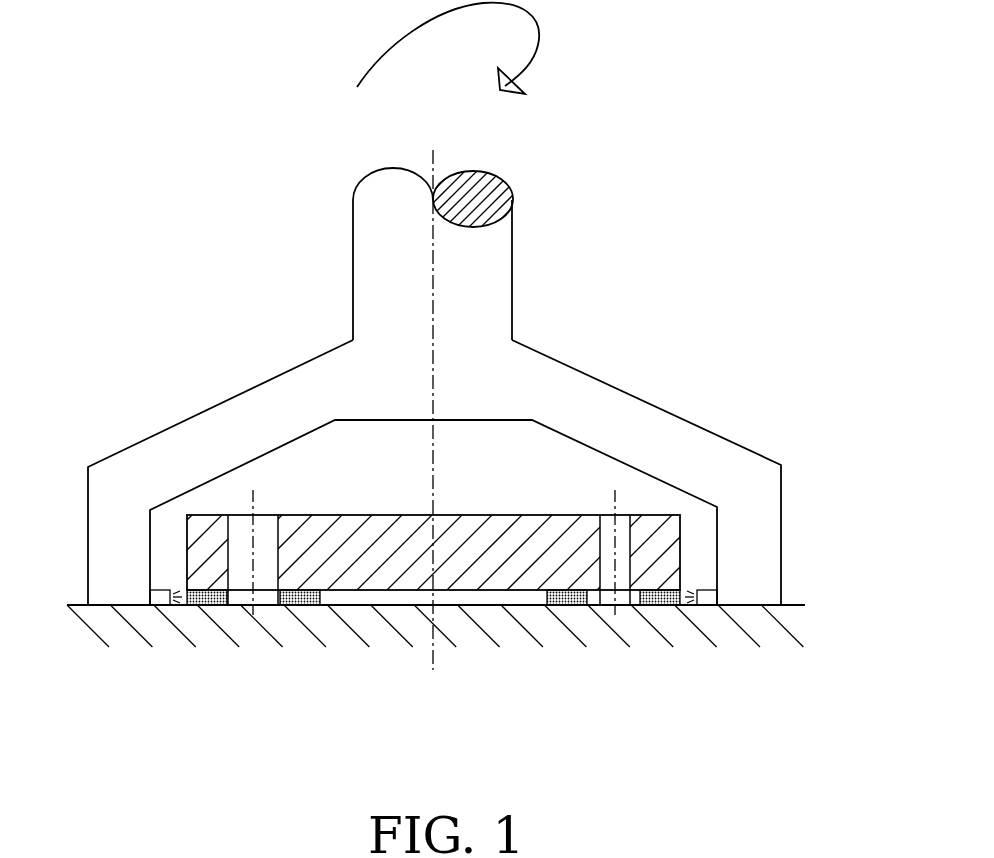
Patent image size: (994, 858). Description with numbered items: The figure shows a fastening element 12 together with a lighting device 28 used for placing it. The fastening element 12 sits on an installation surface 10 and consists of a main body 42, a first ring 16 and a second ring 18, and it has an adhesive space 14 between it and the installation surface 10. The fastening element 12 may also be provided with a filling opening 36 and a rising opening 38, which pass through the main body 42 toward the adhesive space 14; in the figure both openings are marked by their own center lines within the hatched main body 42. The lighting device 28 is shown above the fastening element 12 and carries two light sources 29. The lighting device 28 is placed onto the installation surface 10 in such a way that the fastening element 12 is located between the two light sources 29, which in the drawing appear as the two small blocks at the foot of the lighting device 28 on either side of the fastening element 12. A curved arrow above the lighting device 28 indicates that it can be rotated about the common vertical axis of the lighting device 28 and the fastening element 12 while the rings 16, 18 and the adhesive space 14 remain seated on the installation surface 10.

The installation surface 10 is at (798, 603).
The fastening element 12 is at (683, 532).
The adhesive space 14 is at (621, 595).
The first ring 16 is at (205, 598).
The second ring 18 is at (300, 598).
The lighting device 28 is at (517, 253).
The light source 29 is at (158, 598).
The filling opening 36 is at (253, 532).
The rising opening 38 is at (610, 527).
The main body 42 is at (340, 538).